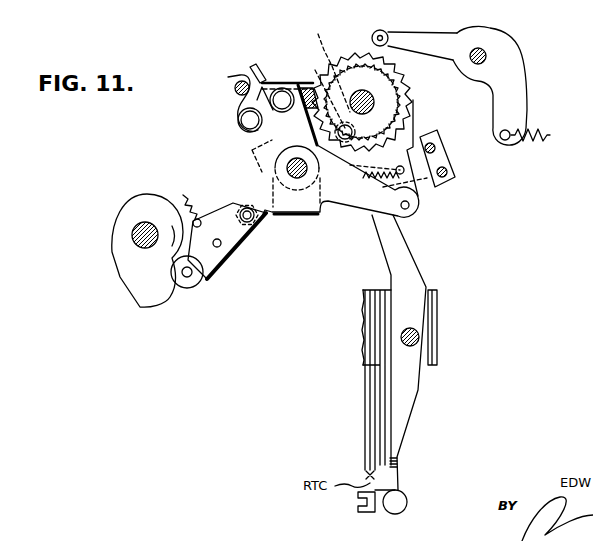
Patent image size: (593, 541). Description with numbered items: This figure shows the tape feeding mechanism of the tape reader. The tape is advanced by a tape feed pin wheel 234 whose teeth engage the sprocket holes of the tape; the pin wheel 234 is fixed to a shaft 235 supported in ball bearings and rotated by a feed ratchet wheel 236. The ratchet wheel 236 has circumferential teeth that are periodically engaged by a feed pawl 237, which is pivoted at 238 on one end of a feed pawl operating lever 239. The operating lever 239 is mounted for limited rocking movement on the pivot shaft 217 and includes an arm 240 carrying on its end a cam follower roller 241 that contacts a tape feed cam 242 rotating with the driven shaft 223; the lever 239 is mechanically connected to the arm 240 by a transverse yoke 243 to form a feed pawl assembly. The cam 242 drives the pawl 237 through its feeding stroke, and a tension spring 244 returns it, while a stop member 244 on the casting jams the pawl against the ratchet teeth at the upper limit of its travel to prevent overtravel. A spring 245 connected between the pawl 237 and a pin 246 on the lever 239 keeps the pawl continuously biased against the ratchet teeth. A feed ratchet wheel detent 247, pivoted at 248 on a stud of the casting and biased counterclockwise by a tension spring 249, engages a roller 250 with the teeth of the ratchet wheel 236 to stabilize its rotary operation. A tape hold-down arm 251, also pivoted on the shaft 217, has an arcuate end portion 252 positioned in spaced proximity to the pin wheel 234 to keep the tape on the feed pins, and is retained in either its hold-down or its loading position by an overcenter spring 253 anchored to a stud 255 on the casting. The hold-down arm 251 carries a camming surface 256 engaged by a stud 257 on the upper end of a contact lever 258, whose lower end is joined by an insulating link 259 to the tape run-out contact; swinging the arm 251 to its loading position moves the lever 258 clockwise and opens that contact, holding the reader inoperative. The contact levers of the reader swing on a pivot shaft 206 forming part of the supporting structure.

The pivot shaft 206 is at (419, 337).
The pivot shaft 217 is at (287, 166).
The driven shaft 223 is at (132, 233).
The tape feed pin wheel 234 is at (398, 100).
The shaft 235 is at (375, 103).
The feed ratchet wheel 236 is at (352, 52).
The feed pawl 237 is at (421, 135).
The pivot 238 is at (410, 205).
The feed pawl operating lever 239 is at (398, 216).
The arm 240 is at (208, 268).
The cam follower roller 241 is at (186, 289).
The tape feed cam 242 is at (118, 250).
The transverse yoke 243 is at (312, 214).
The tension spring 244 is at (436, 146).
The spring 245 is at (448, 171).
The pin 246 is at (377, 167).
The feed ratchet wheel detent 247 is at (434, 33).
The pivot 248 is at (485, 50).
The tension spring 249 is at (539, 132).
The roller 250 is at (381, 30).
The tape hold-down arm 251 is at (289, 83).
The arcuate end portion 252 is at (323, 81).
The overcenter spring 253 is at (238, 124).
The stud 255 is at (235, 91).
The camming surface 256 is at (355, 180).
The stud 257 is at (367, 185).
The contact lever 258 is at (401, 264).
The insulating link 259 is at (375, 513).